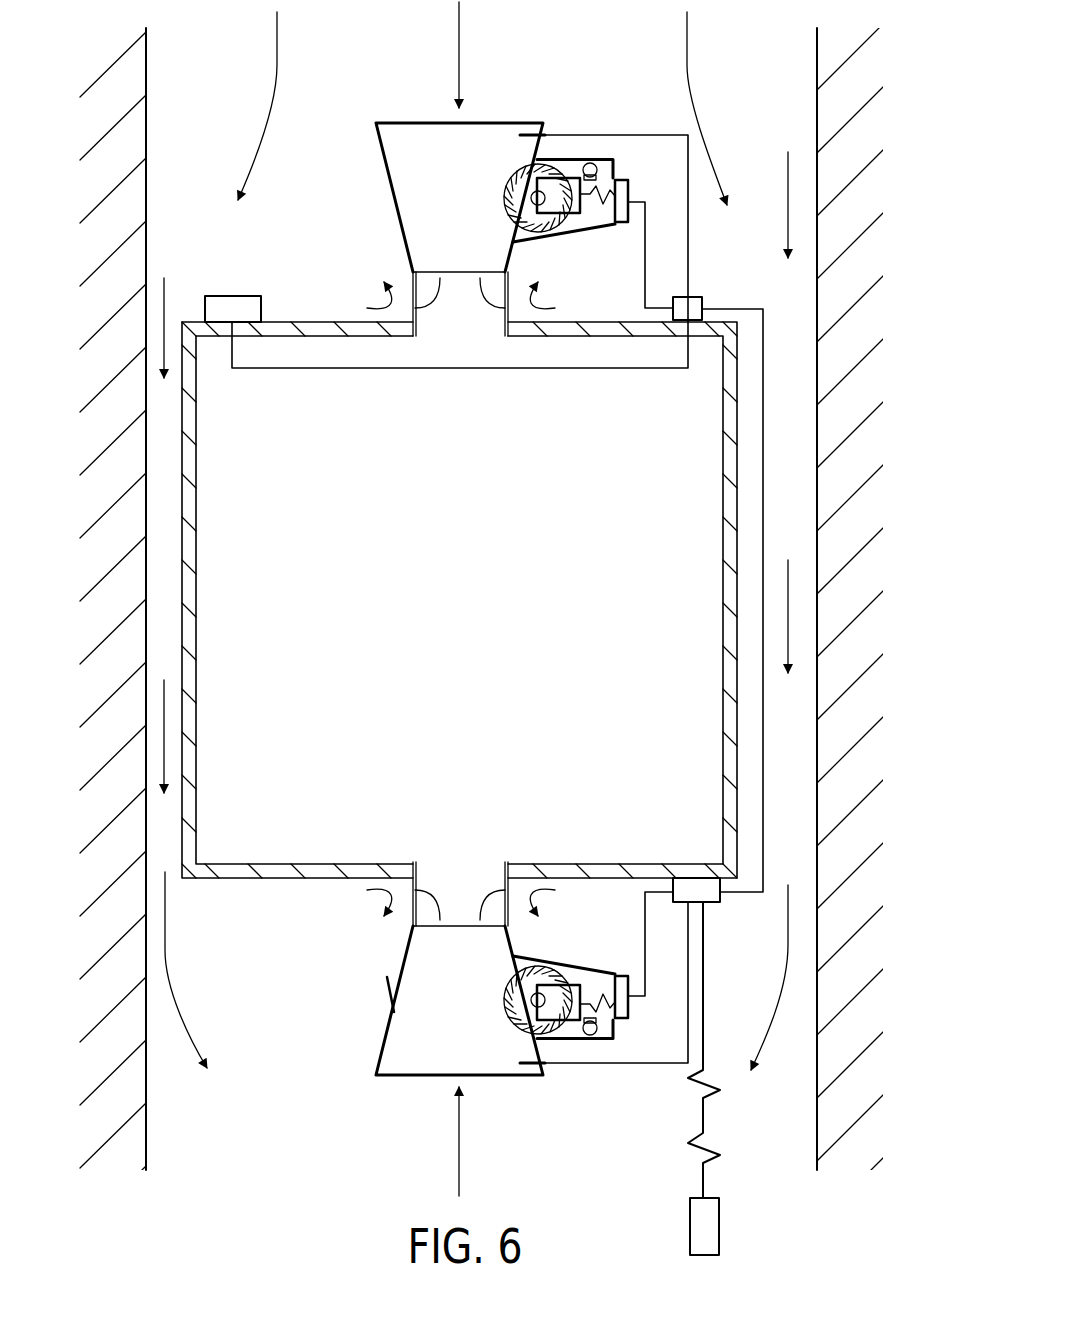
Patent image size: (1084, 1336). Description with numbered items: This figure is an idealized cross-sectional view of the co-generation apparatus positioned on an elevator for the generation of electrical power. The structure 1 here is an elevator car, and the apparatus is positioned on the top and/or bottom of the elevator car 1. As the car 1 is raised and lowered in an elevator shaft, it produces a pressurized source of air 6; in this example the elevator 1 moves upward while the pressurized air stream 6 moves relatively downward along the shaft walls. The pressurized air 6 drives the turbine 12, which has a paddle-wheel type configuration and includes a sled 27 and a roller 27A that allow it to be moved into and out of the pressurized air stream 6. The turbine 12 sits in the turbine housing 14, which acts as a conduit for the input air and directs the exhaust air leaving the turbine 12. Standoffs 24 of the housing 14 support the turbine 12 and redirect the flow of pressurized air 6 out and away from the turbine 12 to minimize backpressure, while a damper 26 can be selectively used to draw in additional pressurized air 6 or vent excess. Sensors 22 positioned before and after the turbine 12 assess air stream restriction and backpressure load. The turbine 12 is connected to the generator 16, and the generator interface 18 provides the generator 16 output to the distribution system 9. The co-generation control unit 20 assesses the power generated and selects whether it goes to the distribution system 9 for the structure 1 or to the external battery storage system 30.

The structure 1 is at (462, 504).
The pressurized air stream 6 is at (457, 47).
The distribution system 9 is at (720, 1217).
The turbine 12 is at (518, 177).
The turbine housing 14 is at (392, 190).
The generator 16 is at (584, 212).
The generator interface 18 is at (627, 178).
The co-generation control unit 20 is at (692, 293).
The sensors 22 is at (531, 133).
The standoffs 24 is at (413, 290).
The damper 26 is at (383, 990).
The sled 27 is at (578, 157).
The roller 27A is at (603, 158).
The external battery storage system 30 is at (245, 295).